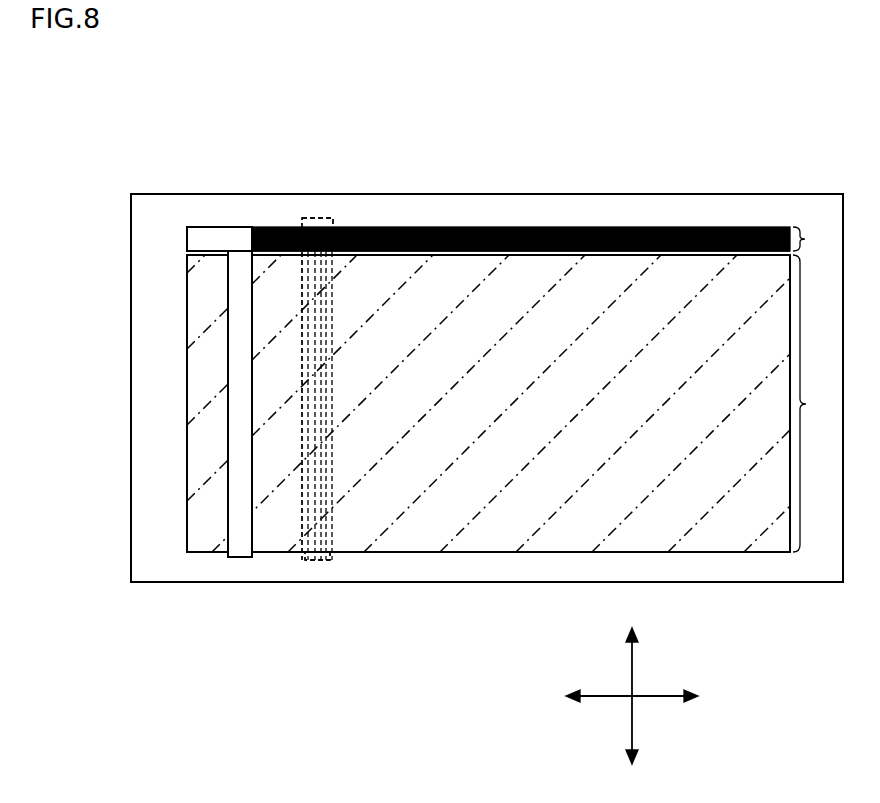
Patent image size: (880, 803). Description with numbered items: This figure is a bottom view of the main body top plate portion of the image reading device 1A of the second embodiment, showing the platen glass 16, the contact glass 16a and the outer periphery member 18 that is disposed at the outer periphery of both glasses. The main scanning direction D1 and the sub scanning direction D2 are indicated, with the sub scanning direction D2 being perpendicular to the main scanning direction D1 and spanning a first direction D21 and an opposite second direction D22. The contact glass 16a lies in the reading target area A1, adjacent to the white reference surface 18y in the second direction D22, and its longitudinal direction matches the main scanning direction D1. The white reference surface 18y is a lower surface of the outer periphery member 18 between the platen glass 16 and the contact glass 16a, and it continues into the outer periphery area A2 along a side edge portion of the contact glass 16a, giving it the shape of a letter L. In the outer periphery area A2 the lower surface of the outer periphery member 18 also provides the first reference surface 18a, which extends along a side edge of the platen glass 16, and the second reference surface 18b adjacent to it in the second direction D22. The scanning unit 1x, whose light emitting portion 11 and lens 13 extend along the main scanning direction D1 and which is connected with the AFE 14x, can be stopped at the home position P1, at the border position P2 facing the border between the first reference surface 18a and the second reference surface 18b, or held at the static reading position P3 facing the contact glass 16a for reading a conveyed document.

The image reading device 1A is at (121, 164).
The outer periphery member 18 is at (403, 585).
The first reference surface 18a is at (695, 225).
The second reference surface 18b is at (185, 237).
The white reference surface 18y is at (239, 560).
The platen glass 16 is at (565, 555).
The contact glass 16a is at (203, 555).
The light emitting portion 11 is at (321, 224).
The lens 13 is at (316, 220).
The scanning unit 1x is at (311, 565).
The AFE 14x is at (319, 565).
The home position P1 is at (240, 222).
The border position P2 is at (253, 222).
The static reading position P3 is at (208, 222).
The reading target area A1 is at (815, 403).
The outer periphery area A2 is at (815, 239).
The main scanning direction D1 is at (632, 668).
The sub scanning direction D2 is at (598, 698).
The first direction D21 is at (662, 697).
The second direction D22 is at (549, 697).